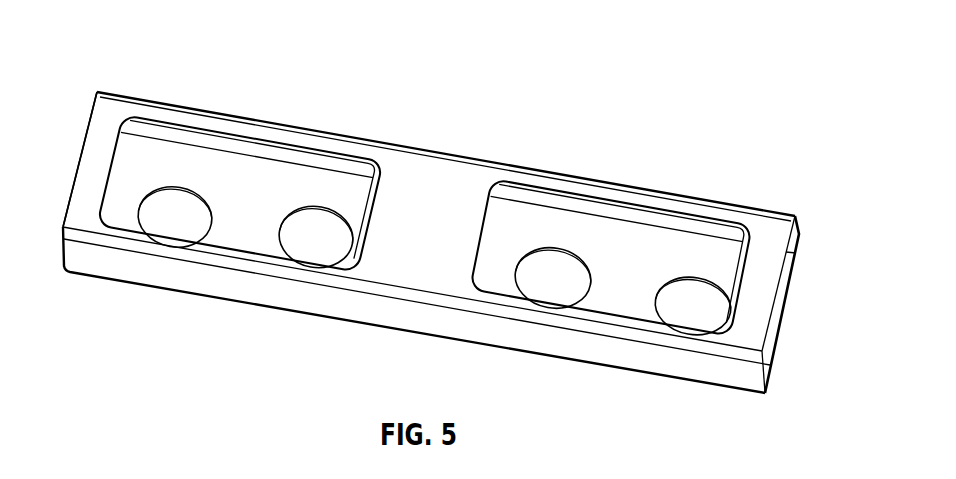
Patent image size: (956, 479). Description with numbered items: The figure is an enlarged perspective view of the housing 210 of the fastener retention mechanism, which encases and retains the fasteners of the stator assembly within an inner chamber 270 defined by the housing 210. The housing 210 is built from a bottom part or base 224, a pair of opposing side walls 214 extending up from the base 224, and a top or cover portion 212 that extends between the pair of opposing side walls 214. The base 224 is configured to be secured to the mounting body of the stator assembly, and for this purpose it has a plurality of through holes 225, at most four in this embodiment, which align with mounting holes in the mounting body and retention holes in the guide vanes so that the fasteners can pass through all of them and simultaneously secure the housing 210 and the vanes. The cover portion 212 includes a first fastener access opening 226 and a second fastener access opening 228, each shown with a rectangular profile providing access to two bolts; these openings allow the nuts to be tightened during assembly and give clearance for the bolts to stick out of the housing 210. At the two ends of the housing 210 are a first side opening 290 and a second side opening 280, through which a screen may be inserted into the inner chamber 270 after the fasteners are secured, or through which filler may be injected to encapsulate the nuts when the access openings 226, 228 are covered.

The housing 210 is at (522, 57).
The cover portion 212 is at (418, 262).
The side walls 214 is at (467, 157).
The base 224 is at (307, 188).
The through holes 225 is at (555, 280).
The first fastener access opening 226 is at (247, 222).
The second fastener access opening 228 is at (627, 290).
The inner chamber 270 is at (205, 175).
The second side opening 280 is at (787, 283).
The first side opening 290 is at (67, 167).